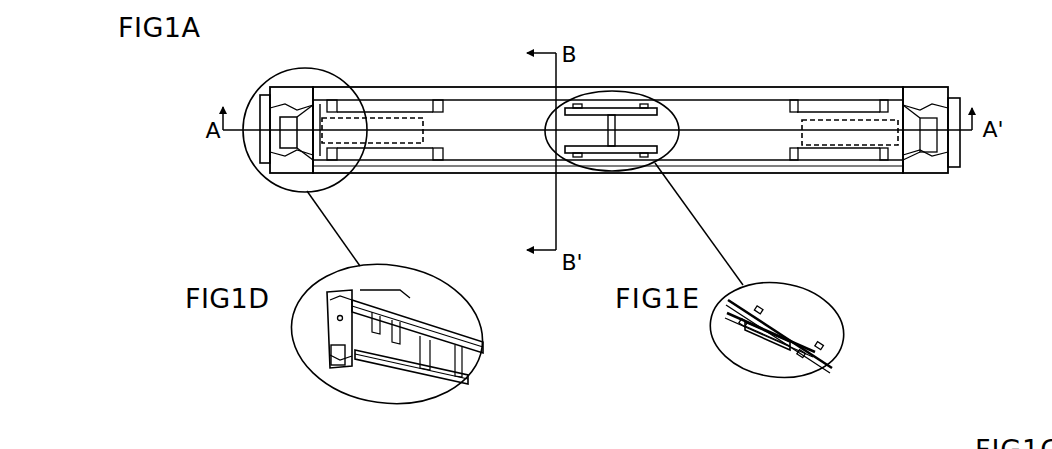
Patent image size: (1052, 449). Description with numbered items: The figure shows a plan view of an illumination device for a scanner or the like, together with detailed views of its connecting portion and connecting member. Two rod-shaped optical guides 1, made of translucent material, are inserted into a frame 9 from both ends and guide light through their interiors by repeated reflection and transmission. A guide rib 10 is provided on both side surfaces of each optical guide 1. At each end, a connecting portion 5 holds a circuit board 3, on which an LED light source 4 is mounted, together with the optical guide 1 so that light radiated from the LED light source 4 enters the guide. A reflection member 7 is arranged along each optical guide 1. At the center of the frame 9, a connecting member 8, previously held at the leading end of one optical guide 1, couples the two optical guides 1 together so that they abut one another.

In FIG. 1A, the optical guide 1 is at (400, 112).
In FIG. 1D, the optical guide 1 is at (457, 322).
In FIG. 1E, the optical guide 1 is at (733, 303).
In FIG. 1A, the circuit board 3 is at (265, 148).
In FIG. 1A, the LED light source 4 is at (279, 120).
In FIG. 1A, the connecting portion 5 is at (293, 170).
In FIG. 1D, the connecting portion 5 is at (337, 333).
In FIG. 1A, the reflection member 7 is at (367, 120).
In FIG. 1A, the connecting member 8 is at (607, 150).
In FIG. 1E, the connecting member 8 is at (755, 340).
In FIG. 1A, the frame 9 is at (492, 168).
In FIG. 1A, the guide rib 10 is at (333, 102).
In FIG. 1E, the guide rib 10 is at (760, 310).